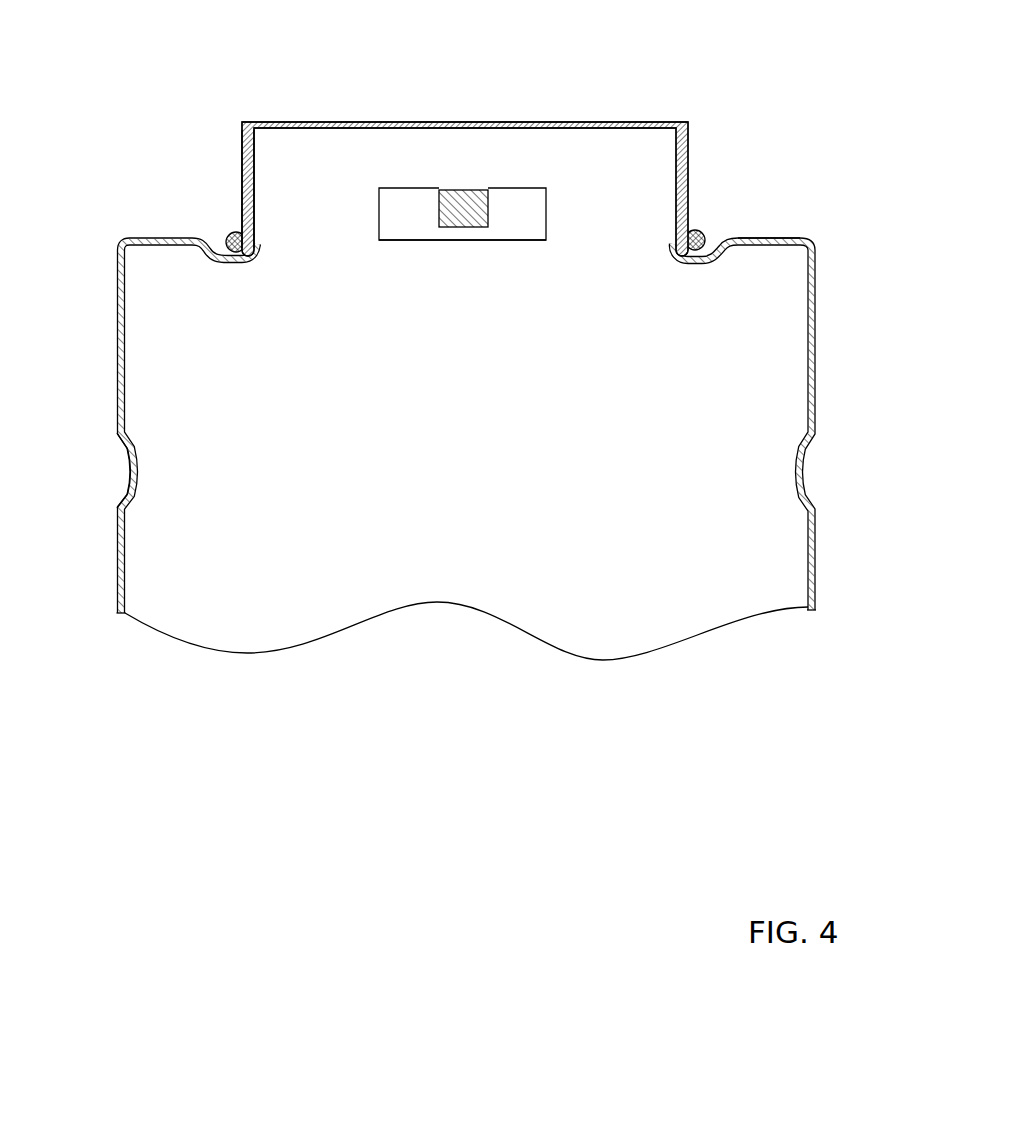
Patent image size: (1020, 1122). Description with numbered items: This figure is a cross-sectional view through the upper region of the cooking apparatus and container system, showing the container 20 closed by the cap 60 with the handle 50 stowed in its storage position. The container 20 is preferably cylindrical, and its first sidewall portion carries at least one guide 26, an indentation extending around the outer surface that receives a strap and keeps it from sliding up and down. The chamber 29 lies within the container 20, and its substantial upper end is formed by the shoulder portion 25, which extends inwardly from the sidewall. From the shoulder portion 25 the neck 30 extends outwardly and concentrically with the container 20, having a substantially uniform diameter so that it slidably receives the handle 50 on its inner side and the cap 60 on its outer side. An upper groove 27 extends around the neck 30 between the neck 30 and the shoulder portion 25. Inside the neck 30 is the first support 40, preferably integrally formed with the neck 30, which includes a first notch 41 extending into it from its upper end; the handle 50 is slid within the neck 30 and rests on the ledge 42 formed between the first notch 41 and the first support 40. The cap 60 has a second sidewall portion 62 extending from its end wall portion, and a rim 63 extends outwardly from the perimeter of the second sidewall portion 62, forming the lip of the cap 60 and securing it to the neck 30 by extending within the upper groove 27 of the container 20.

The container 20 is at (817, 357).
The shoulder portion 25 is at (812, 244).
The guide 26 is at (130, 471).
The upper groove 27 is at (219, 256).
The chamber 29 is at (662, 593).
The neck 30 is at (254, 163).
The first support 40 is at (547, 207).
The first notch 41 is at (440, 215).
The ledge 42 is at (477, 237).
The handle 50 is at (465, 189).
The cap 60 is at (458, 121).
The second sidewall portion 62 is at (241, 182).
The rim 63 is at (700, 233).